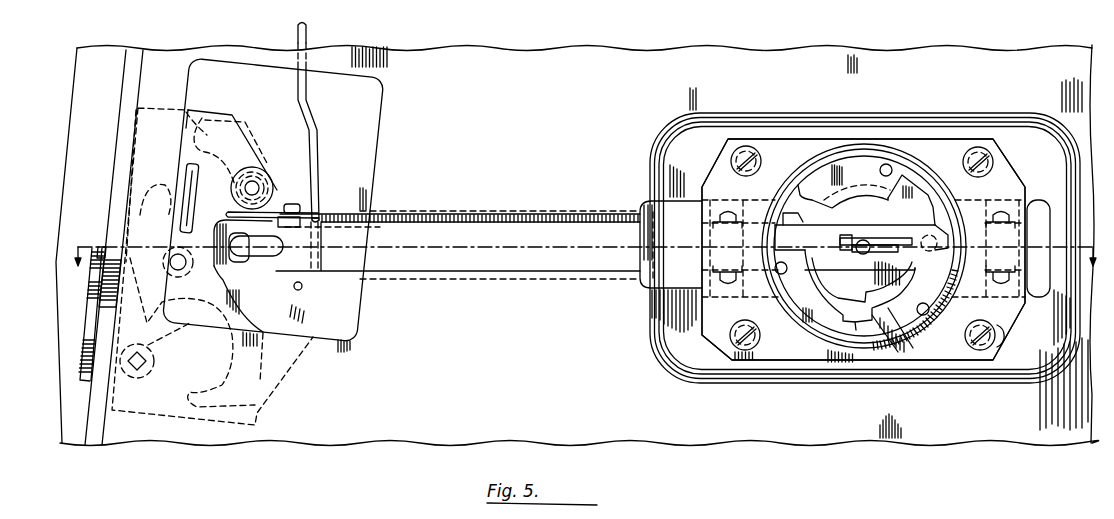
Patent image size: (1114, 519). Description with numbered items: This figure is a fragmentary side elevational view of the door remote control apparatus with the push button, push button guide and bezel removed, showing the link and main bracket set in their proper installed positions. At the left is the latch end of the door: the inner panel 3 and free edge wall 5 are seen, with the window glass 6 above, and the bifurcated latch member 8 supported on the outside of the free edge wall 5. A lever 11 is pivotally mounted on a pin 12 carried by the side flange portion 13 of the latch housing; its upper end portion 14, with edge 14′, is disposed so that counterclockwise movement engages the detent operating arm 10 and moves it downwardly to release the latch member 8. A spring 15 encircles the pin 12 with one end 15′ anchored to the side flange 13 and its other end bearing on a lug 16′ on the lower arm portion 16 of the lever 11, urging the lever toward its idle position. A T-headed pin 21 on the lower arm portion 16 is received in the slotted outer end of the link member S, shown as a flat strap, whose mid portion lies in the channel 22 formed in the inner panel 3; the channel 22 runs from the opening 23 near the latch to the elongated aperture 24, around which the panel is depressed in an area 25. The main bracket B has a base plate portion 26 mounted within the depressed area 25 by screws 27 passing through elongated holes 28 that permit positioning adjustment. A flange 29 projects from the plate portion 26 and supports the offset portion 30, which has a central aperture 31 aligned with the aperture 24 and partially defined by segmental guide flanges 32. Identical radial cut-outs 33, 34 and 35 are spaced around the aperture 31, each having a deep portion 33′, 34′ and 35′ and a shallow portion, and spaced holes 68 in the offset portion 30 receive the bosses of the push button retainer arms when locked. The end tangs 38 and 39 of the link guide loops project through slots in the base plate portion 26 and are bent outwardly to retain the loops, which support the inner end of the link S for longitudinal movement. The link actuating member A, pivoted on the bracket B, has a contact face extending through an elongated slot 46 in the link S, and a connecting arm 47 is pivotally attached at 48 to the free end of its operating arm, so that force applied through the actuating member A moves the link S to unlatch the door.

The inner panel 3 is at (661, 438).
The free edge wall 5 is at (100, 424).
The window glass 6 is at (585, 270).
The latch member 8 is at (90, 349).
The operating arm 10 is at (188, 205).
The lever 11 is at (276, 208).
The pin 12 is at (255, 188).
The side flange portion 13 is at (206, 112).
The upper end portion 14 is at (186, 111).
The lever edge 14′ is at (247, 128).
The spring 15 is at (241, 167).
The spring end 15′ is at (268, 158).
The lower arm portion 16 is at (228, 216).
The lug 16′ is at (298, 209).
The T-headed pin 21 is at (241, 258).
The channel 22 is at (271, 257).
The opening 23 is at (350, 319).
The elongated aperture 24 is at (651, 292).
The depressed area 25 is at (709, 384).
The base plate portion 26 is at (960, 135).
The screws 27 is at (748, 147).
The elongated holes 28 is at (1000, 337).
The flange 29 is at (822, 339).
The offset portion 30 is at (849, 334).
The central aperture 31 is at (894, 341).
The guide flanges 32 is at (856, 186).
The cut out portion 33 is at (821, 211).
The deep portion 33′ is at (786, 218).
The cut out portion 34 is at (905, 204).
The deep portion 34′ is at (912, 186).
The cut out portion 35 is at (864, 300).
The deep portion 35′ is at (906, 326).
The end tang 38 is at (731, 214).
The end tang 39 is at (1011, 216).
The elongated slot 46 is at (842, 241).
The connecting arm 47 is at (858, 253).
The pivot 48 is at (863, 236).
The spaced holes 68 is at (889, 165).
The link actuating member A is at (892, 256).
The main bracket B is at (773, 132).
The link member S is at (521, 233).